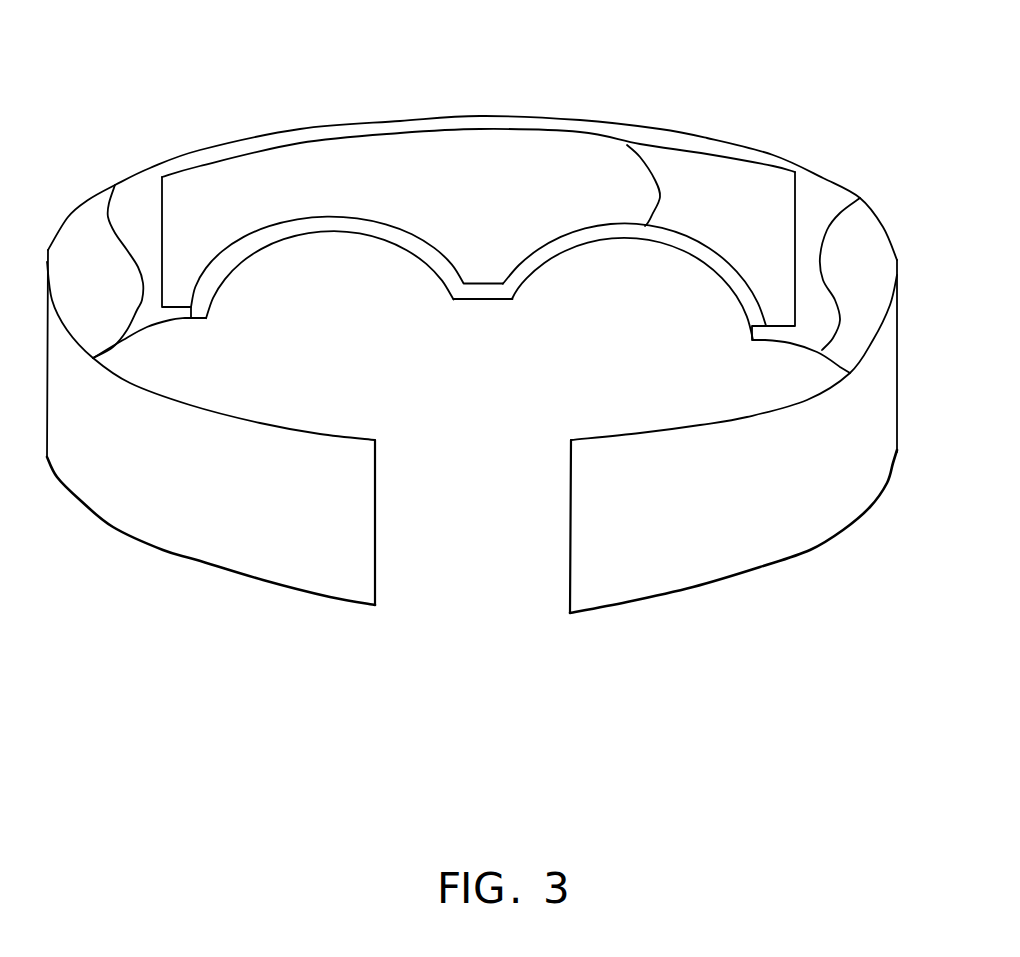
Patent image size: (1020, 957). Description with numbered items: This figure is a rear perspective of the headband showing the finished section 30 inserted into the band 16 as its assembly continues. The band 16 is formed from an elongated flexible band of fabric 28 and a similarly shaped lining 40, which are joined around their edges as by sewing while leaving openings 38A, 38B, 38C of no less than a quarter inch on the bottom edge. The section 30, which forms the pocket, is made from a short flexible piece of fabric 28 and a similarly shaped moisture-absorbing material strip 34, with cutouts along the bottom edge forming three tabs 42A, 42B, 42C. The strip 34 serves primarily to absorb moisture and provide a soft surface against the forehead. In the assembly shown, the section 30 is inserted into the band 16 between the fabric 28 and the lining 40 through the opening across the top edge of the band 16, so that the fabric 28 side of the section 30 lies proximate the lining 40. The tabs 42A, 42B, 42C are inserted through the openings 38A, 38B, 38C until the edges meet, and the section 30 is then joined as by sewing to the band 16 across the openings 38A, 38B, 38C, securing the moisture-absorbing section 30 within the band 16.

The band 16 is at (112, 527).
The fabric 28 is at (667, 173).
The section 30 is at (797, 193).
The moisture-absorbing material strip 34 is at (570, 163).
The lining 40 is at (87, 260).
The opening 38A is at (187, 322).
The opening 38B is at (475, 302).
The opening 38C is at (772, 343).
The tab 42A is at (173, 293).
The tab 42B is at (513, 300).
The tab 42C is at (780, 313).